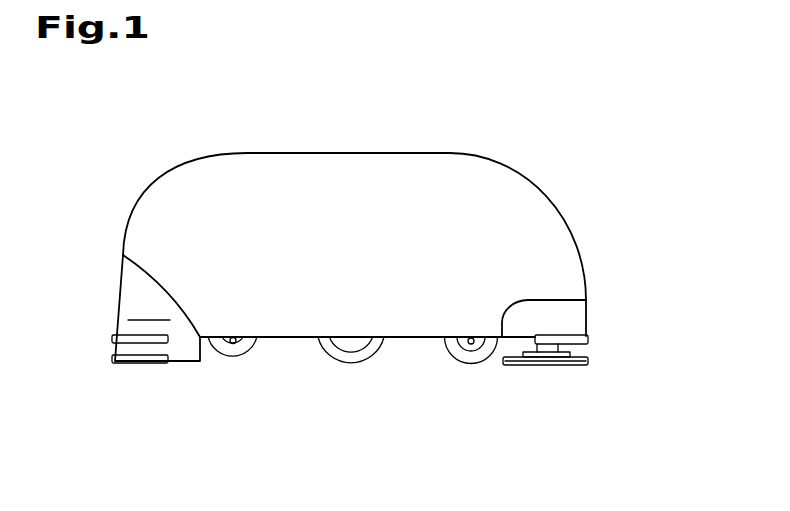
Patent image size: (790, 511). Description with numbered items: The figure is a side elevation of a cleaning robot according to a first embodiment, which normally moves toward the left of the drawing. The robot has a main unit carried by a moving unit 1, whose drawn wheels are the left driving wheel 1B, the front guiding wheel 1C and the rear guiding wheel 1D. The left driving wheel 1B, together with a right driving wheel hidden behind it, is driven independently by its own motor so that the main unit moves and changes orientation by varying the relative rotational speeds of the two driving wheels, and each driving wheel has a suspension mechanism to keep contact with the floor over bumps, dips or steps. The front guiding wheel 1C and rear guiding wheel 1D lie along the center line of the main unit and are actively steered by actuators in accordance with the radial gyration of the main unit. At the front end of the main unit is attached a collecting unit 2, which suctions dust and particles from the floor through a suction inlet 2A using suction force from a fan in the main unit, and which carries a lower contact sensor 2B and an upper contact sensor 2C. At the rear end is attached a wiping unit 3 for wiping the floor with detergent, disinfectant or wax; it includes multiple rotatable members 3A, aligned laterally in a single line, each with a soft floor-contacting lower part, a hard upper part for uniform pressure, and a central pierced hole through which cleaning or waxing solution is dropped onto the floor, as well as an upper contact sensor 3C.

The moving unit 1 is at (490, 412).
The left driving wheel 1B is at (355, 360).
The front guiding wheel 1C is at (240, 355).
The rear guiding wheel 1D is at (472, 358).
The collecting unit 2 is at (112, 268).
The suction inlet 2A is at (153, 363).
The lower contact sensor 2B is at (105, 337).
The upper contact sensor 2C is at (110, 337).
The wiping unit 3 is at (593, 267).
The rotatable members 3A is at (570, 387).
The upper contact sensor 3C is at (590, 338).